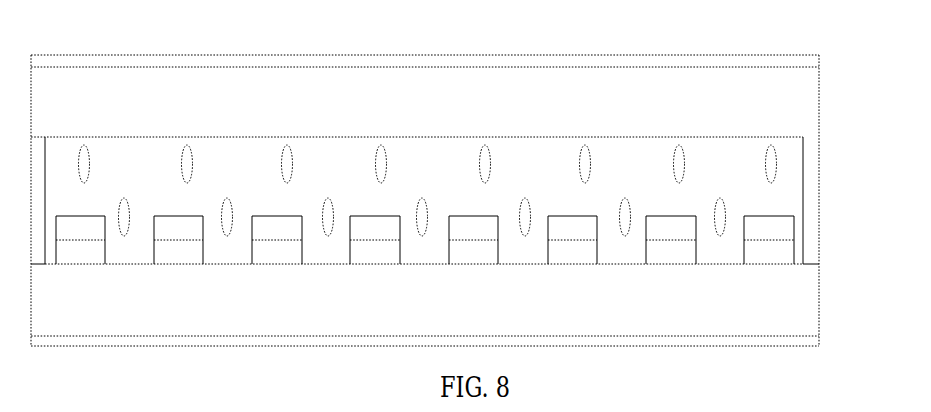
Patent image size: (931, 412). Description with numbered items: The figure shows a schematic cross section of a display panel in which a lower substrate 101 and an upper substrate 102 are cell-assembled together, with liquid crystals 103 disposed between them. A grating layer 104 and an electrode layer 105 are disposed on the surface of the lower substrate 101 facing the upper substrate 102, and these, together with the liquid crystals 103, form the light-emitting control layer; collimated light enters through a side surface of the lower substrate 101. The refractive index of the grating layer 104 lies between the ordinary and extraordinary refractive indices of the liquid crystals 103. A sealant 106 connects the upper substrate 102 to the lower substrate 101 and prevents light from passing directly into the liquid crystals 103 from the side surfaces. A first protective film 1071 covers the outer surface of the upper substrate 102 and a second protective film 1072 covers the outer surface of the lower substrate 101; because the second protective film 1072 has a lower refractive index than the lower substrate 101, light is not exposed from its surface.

The first protective film 1071 is at (813, 55).
The upper substrate 102 is at (820, 106).
The liquid crystals 103 is at (777, 173).
The sealant 106 is at (819, 192).
The electrode layer 105 is at (795, 229).
The grating layer 104 is at (795, 254).
The lower substrate 101 is at (820, 322).
The second protective film 1072 is at (820, 344).